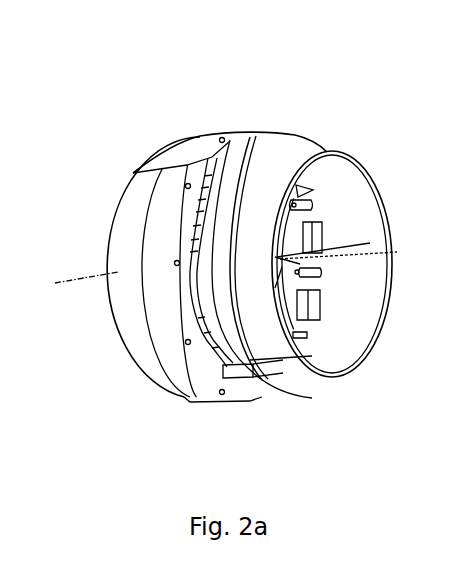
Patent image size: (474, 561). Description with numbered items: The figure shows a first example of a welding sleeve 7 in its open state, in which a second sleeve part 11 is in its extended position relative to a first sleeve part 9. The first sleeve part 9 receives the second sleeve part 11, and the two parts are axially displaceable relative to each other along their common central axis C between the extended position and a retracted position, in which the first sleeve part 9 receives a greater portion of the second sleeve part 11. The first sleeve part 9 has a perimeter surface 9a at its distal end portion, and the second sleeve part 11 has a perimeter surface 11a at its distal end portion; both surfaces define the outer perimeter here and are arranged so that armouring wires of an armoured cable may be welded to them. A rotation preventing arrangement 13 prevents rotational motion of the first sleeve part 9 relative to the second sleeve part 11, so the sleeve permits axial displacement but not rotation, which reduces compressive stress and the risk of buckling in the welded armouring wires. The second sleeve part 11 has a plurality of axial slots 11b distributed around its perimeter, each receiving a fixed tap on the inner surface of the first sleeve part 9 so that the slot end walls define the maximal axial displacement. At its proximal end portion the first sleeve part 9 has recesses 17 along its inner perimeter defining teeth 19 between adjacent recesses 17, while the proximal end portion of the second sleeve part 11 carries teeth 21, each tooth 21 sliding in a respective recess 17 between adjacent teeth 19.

The welding sleeve 7 is at (246, 80).
The first sleeve part 9 is at (194, 131).
The perimeter surface 9a is at (124, 229).
The second sleeve part 11 is at (298, 141).
The perimeter surface 11a is at (262, 382).
The axial slot 11b is at (190, 384).
The rotation preventing arrangement 13 is at (336, 263).
The recess 17 is at (295, 196).
The tooth 19 is at (318, 325).
The tooth 21 is at (283, 217).
The central axis C is at (72, 281).